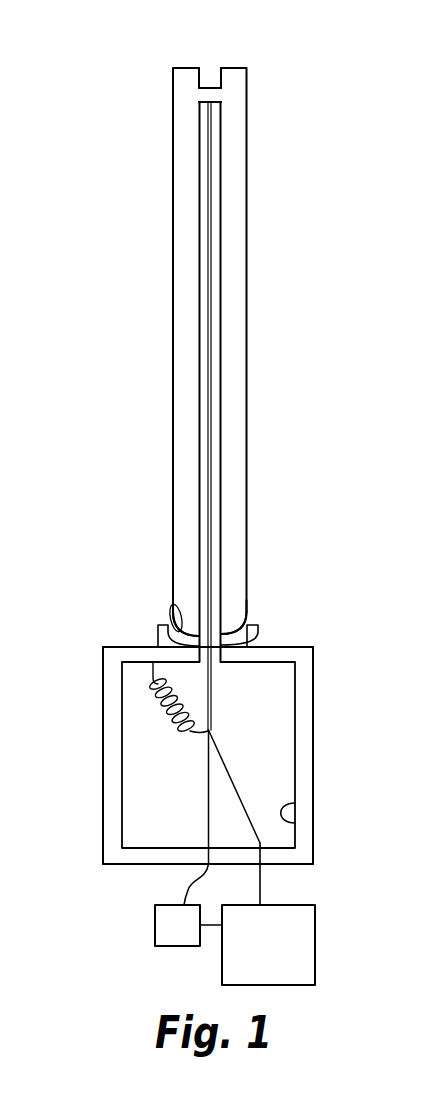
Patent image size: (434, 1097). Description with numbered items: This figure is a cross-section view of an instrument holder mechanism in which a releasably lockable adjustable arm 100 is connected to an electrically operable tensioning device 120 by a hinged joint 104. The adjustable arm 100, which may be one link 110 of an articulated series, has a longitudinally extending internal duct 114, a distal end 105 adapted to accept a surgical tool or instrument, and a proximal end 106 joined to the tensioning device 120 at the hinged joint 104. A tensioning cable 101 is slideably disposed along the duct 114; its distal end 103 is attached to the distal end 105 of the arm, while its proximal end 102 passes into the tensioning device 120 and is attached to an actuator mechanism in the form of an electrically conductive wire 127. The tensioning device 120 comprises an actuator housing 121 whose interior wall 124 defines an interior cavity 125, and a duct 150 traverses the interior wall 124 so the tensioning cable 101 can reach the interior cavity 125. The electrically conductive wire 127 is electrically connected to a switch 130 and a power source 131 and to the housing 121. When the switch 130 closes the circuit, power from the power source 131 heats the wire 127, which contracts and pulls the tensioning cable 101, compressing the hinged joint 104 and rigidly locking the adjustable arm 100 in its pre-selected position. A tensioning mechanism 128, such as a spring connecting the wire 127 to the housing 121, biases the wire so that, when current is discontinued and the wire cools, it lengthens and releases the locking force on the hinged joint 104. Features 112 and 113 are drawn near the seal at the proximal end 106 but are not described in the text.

The adjustable arm 100 is at (265, 140).
The tensioning cable 101 is at (202, 179).
The proximal end of tensioning cable 102 is at (201, 722).
The distal end of tensioning cable 103 is at (201, 94).
The hinged joint 104 is at (235, 612).
The distal end of adjustable arm 105 is at (200, 67).
The proximal end of adjustable arm 106 is at (219, 615).
The link 110 is at (237, 362).
The seal region 112 is at (162, 609).
The seal 113 is at (172, 622).
The duct 114 is at (205, 282).
The tensioning device 120 is at (314, 767).
The actuator housing 121 is at (95, 729).
The interior wall 124 is at (287, 814).
The interior cavity 125 is at (267, 717).
The electrically conductive wire 127 is at (199, 779).
The tensioning mechanism 128 is at (145, 670).
The switch 130 is at (152, 910).
The power source 131 is at (294, 912).
The duct 150 is at (207, 649).